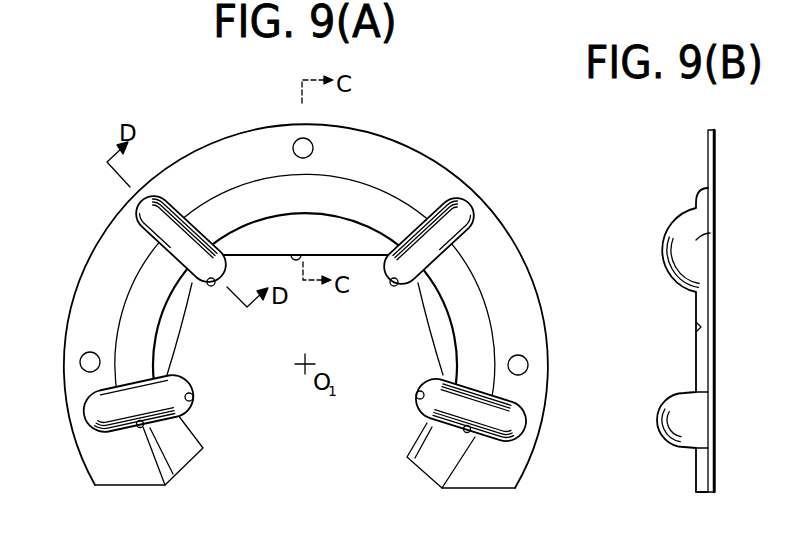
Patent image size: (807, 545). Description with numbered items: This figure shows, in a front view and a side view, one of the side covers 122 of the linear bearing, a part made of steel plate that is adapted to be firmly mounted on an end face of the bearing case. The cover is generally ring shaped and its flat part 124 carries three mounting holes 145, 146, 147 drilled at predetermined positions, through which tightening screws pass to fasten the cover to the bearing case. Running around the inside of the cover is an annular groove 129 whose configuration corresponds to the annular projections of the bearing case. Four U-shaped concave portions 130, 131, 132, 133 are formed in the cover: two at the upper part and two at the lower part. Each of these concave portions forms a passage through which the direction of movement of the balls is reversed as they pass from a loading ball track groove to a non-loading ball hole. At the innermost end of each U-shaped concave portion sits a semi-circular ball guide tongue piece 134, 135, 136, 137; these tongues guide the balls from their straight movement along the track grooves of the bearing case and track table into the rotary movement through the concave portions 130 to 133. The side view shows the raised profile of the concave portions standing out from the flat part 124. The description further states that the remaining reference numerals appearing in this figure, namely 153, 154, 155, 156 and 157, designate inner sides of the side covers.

In FIG. 9A, the side cover 122 is at (465, 140).
In FIG. 9B, the side cover 122 is at (668, 222).
In FIG. 9B, the flat part 124 is at (707, 143).
In FIG. 9A, the annular groove 129 is at (272, 204).
In FIG. 9B, the annular groove 129 is at (697, 328).
In FIG. 9A, the U-shaped concave portion 130 is at (200, 243).
In FIG. 9A, the U-shaped concave portion 131 is at (453, 238).
In FIG. 9A, the U-shaped concave portion 132 is at (140, 427).
In FIG. 9A, the U-shaped concave portion 133 is at (467, 432).
In FIG. 9B, the U-shaped concave portion 133 is at (659, 414).
In FIG. 9A, the semi-circular ball guide tongue piece 134 is at (212, 286).
In FIG. 9A, the semi-circular ball guide tongue piece 135 is at (394, 286).
In FIG. 9A, the semi-circular ball guide tongue piece 136 is at (193, 397).
In FIG. 9A, the semi-circular ball guide tongue piece 137 is at (416, 395).
In FIG. 9A, the mounting hole 145 is at (312, 148).
In FIG. 9A, the mounting hole 146 is at (82, 363).
In FIG. 9A, the mounting hole 147 is at (527, 364).
In FIG. 9A, the small recess 153 is at (298, 258).
In FIG. 9A, the inclined edge 154 is at (177, 343).
In FIG. 9A, the inclined edge 155 is at (433, 340).
In FIG. 9A, the lower left boss 156 is at (197, 437).
In FIG. 9A, the lower right boss 157 is at (412, 440).